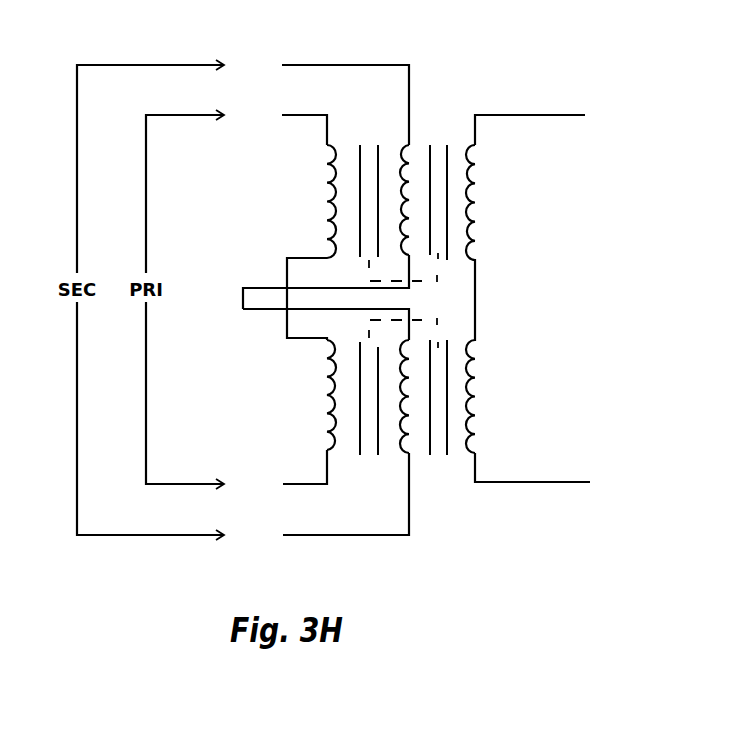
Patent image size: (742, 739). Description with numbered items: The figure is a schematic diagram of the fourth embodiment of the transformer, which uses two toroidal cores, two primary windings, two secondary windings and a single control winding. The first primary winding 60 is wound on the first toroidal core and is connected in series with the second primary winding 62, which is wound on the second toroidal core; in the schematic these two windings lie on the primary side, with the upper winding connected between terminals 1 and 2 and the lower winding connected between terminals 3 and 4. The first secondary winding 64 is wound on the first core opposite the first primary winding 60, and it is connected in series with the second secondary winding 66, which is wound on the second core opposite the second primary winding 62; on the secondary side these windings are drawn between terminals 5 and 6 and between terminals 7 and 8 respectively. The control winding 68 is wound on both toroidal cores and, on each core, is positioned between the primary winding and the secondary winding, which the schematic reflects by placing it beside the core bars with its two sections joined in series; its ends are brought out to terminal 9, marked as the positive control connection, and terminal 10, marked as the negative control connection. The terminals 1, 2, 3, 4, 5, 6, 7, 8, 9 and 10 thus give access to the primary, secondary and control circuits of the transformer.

The primary winding terminal 1 is at (283, 127).
The primary winding terminal 2 is at (307, 273).
The primary winding terminal 3 is at (307, 336).
The primary winding terminal 4 is at (283, 475).
The secondary winding terminal 5 is at (323, 102).
The secondary winding terminal 6 is at (326, 282).
The secondary winding terminal 7 is at (325, 324).
The secondary winding terminal 8 is at (324, 501).
The control winding terminal 9 (+ control) 9 is at (604, 126).
The control winding terminal 10 (- control) 10 is at (604, 476).
The first primary winding 60 is at (336, 157).
The second primary winding 62 is at (337, 448).
The first secondary winding 64 is at (400, 168).
The second secondary winding 66 is at (400, 449).
The control winding 68 is at (478, 315).